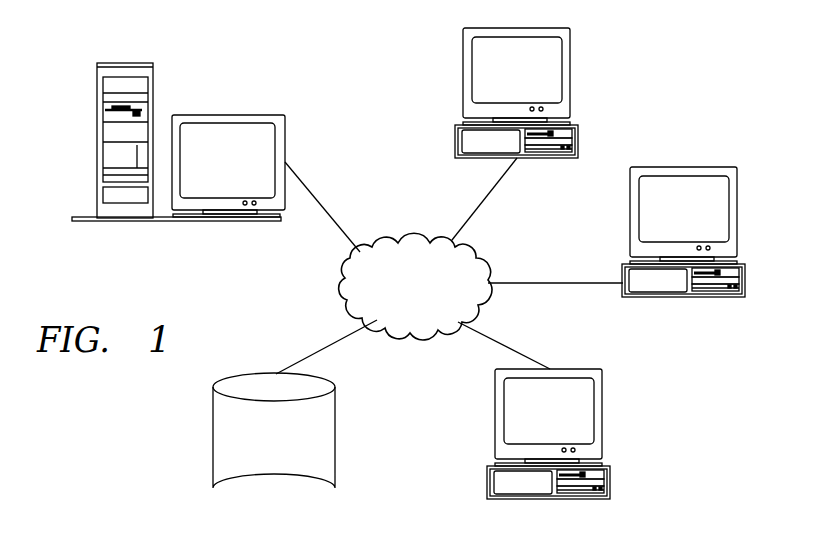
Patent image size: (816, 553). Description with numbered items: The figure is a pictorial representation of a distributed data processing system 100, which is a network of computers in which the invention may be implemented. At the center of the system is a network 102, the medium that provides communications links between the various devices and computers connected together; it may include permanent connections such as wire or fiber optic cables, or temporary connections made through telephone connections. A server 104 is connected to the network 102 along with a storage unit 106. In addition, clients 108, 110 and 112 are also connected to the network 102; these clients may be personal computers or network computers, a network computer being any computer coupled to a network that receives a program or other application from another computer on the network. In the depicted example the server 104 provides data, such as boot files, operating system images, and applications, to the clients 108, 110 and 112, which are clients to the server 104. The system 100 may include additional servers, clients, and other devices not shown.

The distributed data processing system 100 is at (668, 97).
The network 102 is at (398, 295).
The server 104 is at (210, 169).
The storage unit 106 is at (258, 456).
The client 108 is at (516, 93).
The client 110 is at (683, 232).
The client 112 is at (548, 434).